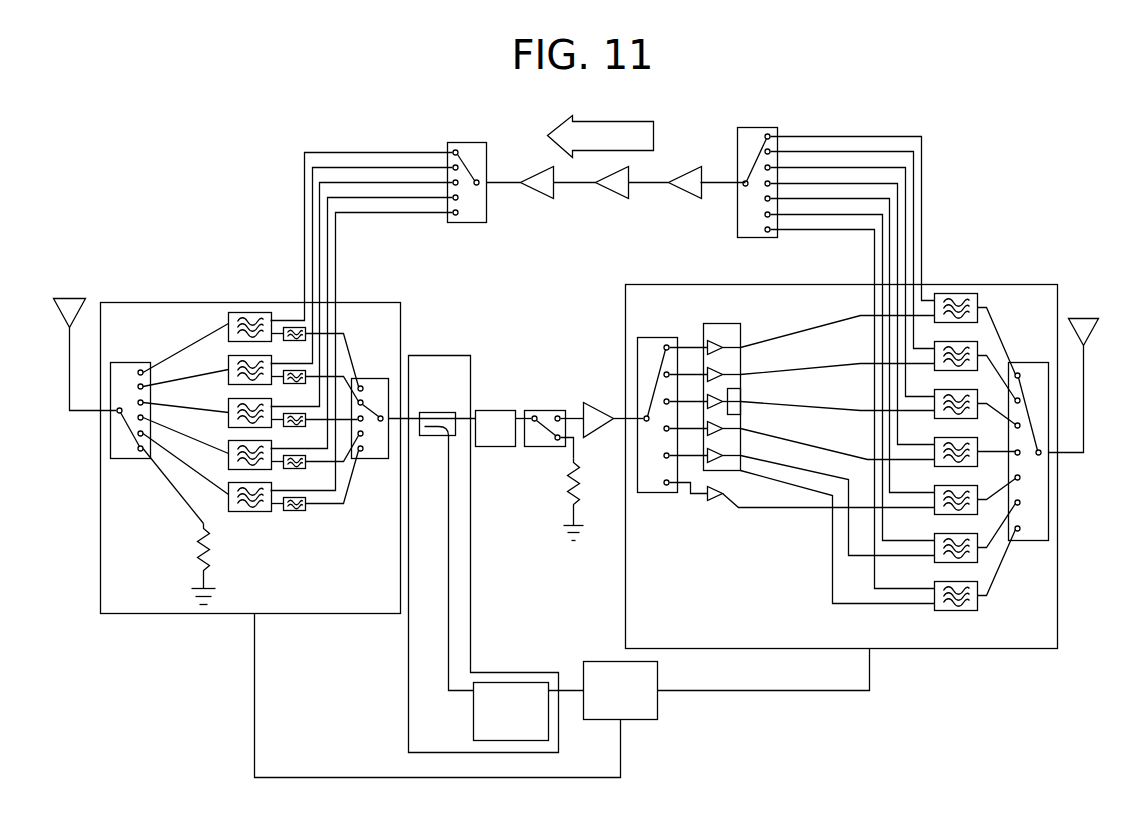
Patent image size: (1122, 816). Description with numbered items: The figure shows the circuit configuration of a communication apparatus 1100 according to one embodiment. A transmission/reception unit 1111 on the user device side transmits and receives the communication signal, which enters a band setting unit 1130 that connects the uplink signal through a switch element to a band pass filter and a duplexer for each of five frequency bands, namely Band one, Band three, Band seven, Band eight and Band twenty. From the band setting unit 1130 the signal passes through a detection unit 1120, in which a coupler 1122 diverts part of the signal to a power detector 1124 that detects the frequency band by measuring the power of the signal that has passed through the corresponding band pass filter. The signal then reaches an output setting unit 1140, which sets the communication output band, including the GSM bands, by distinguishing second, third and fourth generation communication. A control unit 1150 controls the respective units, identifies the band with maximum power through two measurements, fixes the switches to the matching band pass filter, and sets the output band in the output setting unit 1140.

The communication apparatus 1100 is at (899, 110).
The transmission/reception unit 1111 is at (85, 307).
The detection unit 1120 is at (452, 753).
The coupler 1122 is at (457, 412).
The power detector 1124 is at (508, 682).
The band setting unit 1130 is at (190, 302).
The output setting unit 1140 is at (952, 648).
The control unit 1150 is at (636, 719).